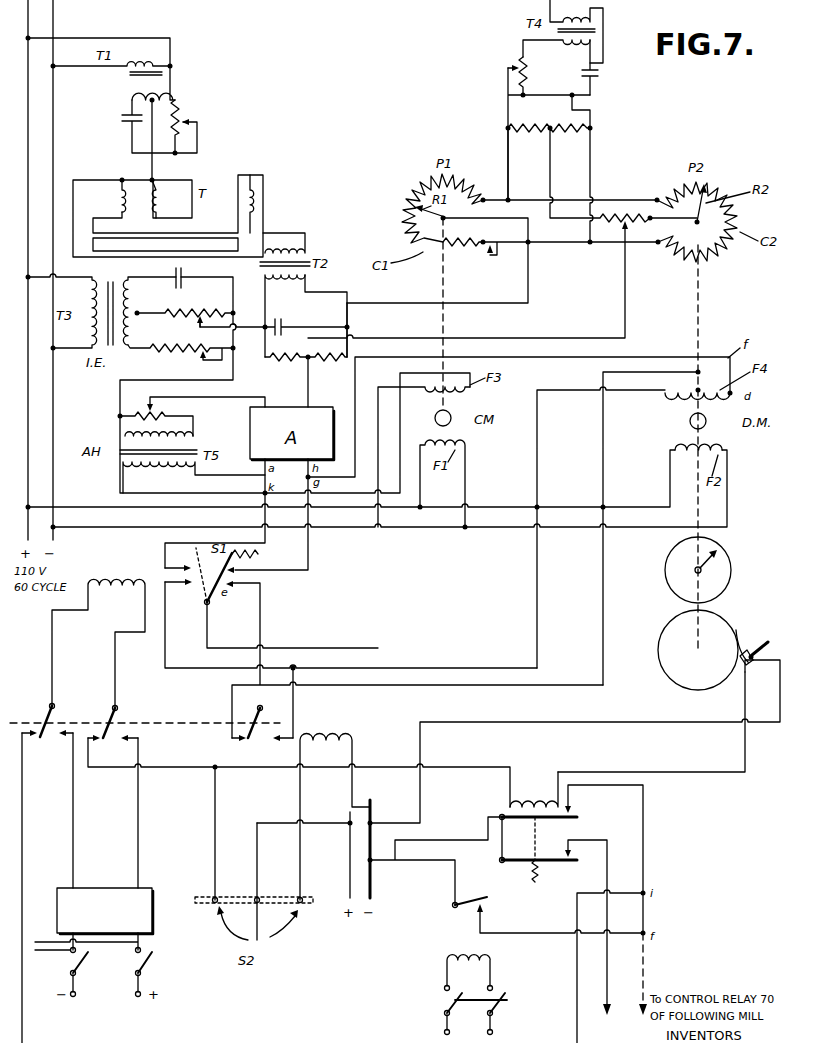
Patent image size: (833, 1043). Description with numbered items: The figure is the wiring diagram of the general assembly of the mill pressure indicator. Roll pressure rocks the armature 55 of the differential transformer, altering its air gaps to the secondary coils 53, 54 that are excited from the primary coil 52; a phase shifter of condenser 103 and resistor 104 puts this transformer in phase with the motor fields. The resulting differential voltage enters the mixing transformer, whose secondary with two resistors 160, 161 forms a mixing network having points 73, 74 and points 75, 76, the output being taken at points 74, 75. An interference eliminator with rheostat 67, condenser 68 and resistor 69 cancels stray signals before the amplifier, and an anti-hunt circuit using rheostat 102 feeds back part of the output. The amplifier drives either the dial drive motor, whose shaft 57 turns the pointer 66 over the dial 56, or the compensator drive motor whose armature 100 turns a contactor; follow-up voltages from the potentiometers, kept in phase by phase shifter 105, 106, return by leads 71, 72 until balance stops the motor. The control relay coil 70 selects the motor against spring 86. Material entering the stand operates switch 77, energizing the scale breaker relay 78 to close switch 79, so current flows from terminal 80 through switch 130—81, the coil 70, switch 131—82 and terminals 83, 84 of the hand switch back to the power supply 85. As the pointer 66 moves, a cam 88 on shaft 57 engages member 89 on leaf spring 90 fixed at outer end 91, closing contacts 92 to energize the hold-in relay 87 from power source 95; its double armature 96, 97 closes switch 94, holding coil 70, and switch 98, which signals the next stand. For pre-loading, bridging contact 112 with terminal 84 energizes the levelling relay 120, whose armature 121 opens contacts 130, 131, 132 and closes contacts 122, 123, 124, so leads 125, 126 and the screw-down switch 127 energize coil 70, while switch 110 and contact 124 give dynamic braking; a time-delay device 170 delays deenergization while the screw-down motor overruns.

The primary coil 52 is at (160, 205).
The secondary coil 53 is at (117, 205).
The secondary coil 54 is at (256, 200).
The armature 55 is at (195, 246).
The dial 56 is at (732, 572).
The shaft 57 is at (704, 338).
The pointer 66 is at (719, 556).
The rheostat 67 is at (186, 352).
The condenser 68 is at (183, 276).
The resistor 69 is at (190, 310).
The control relay coil 70 is at (112, 567).
The lead 71 is at (528, 277).
The lead 72 is at (626, 282).
The mixing network point 73 is at (285, 284).
The mixing network point 74 is at (308, 360).
The mixing network point 75 is at (263, 326).
The mixing network point 76 is at (348, 328).
The switch 77 is at (450, 1000).
The scale breaker relay 78 is at (470, 956).
The switch 79 is at (488, 898).
The power supply terminal 80 is at (395, 862).
The switch 81 is at (57, 741).
The switch 82 is at (108, 742).
The terminal 83 is at (222, 897).
The terminal 84 is at (262, 898).
The power supply 85 is at (349, 823).
The spring 86 is at (256, 553).
The hold-in relay 87 is at (535, 790).
The cam 88 is at (672, 640).
The member 89 is at (745, 641).
The leaf spring 90 is at (769, 642).
The outer end 91 is at (770, 649).
The contacts 92 is at (748, 672).
The switch 94 is at (578, 818).
The power source 95 is at (373, 823).
The armature 96 is at (518, 839).
The armature 97 is at (522, 872).
The switch 98 is at (578, 858).
The armature 100 is at (434, 420).
The rheostat 102 is at (156, 416).
The condenser 103 is at (128, 120).
The resistor 104 is at (186, 109).
The phase shifter element 105 is at (594, 80).
The phase shifter element 106 is at (529, 71).
The switch 110 is at (247, 742).
The contact 112 is at (302, 896).
The levelling relay 120 is at (325, 722).
The armature 121 is at (192, 725).
The circuit contact 122 is at (66, 732).
The circuit contact 123 is at (121, 735).
The circuit contact 124 is at (262, 725).
The lead 125 is at (75, 821).
The lead 126 is at (140, 827).
The switch 127 is at (92, 962).
The circuit contact 130 is at (34, 721).
The circuit contact 131 is at (109, 713).
The circuit contact 132 is at (249, 714).
The resistor 160 is at (285, 360).
The resistor 161 is at (330, 360).
The time-delay device 170 is at (152, 922).